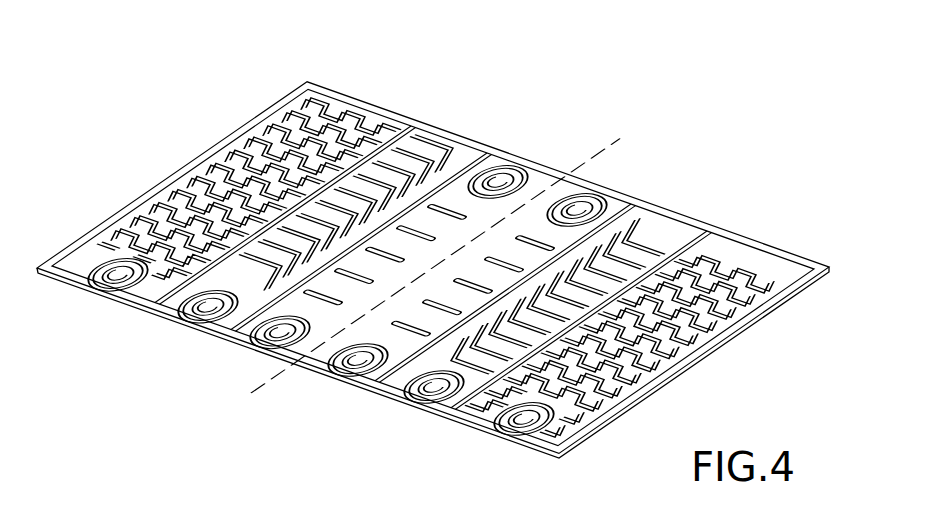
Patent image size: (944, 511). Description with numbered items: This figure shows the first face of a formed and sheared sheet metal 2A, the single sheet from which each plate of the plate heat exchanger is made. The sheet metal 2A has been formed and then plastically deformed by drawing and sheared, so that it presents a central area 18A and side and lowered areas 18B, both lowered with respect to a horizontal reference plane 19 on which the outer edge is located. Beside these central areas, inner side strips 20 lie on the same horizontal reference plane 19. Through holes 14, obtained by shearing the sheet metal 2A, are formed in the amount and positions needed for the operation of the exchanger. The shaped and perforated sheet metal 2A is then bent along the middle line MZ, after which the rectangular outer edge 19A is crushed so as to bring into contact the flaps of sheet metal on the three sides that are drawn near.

The sheet metal 2A is at (198, 142).
The through holes 14 is at (511, 165).
The central area 18A is at (558, 188).
The side and lowered areas 18B is at (397, 134).
The horizontal reference plane 19 is at (488, 149).
The rectangular outer edge 19A is at (793, 258).
The inner side strips 20 is at (358, 126).
The middle line MZ is at (616, 136).